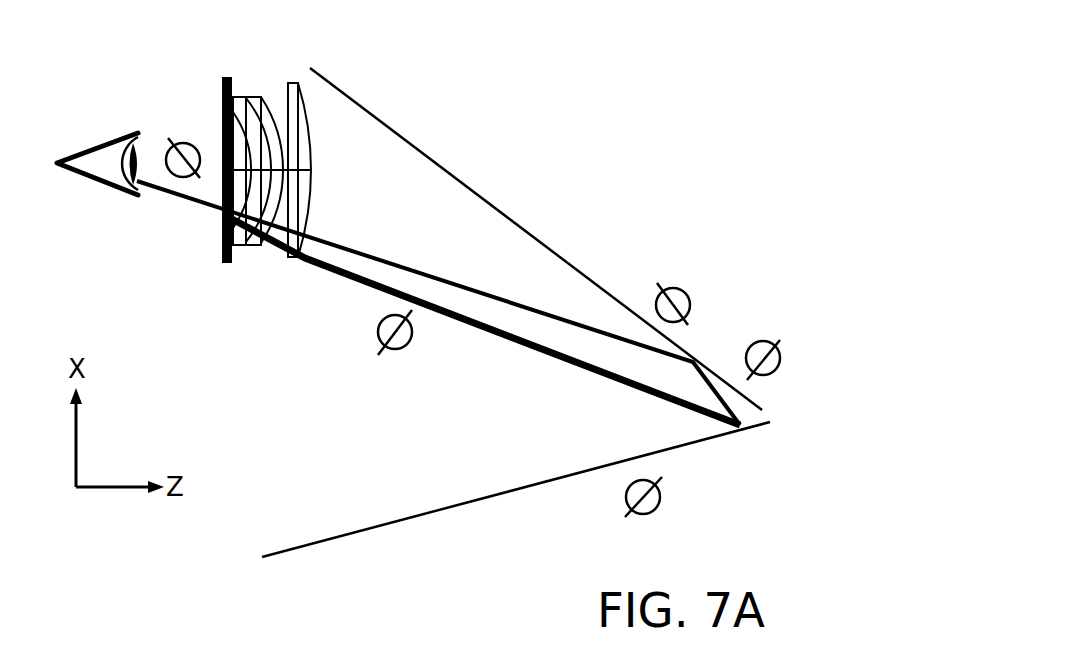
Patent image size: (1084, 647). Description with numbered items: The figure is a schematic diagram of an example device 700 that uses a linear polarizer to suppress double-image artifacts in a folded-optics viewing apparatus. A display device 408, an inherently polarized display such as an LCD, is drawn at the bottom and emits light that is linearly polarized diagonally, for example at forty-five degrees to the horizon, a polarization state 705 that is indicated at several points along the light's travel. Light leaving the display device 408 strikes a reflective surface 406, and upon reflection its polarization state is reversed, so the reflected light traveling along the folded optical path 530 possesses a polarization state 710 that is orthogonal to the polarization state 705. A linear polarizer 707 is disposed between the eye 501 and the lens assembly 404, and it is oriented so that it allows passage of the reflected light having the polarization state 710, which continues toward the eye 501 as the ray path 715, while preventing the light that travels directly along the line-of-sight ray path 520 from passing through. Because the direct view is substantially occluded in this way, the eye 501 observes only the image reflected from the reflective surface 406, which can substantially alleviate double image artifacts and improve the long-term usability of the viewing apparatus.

The example device 700 is at (522, 132).
The eye 501 is at (102, 143).
The ray path 715 is at (218, 193).
The linear polarizer 707 is at (222, 247).
The lens assembly 404 is at (300, 85).
The folded optical path 530 is at (402, 262).
The line-of-sight ray path 520 is at (657, 395).
The reflective surface 406 is at (555, 250).
The display device 408 is at (543, 483).
The polarization state 710 is at (590, 326).
The polarization state 705 is at (790, 380).